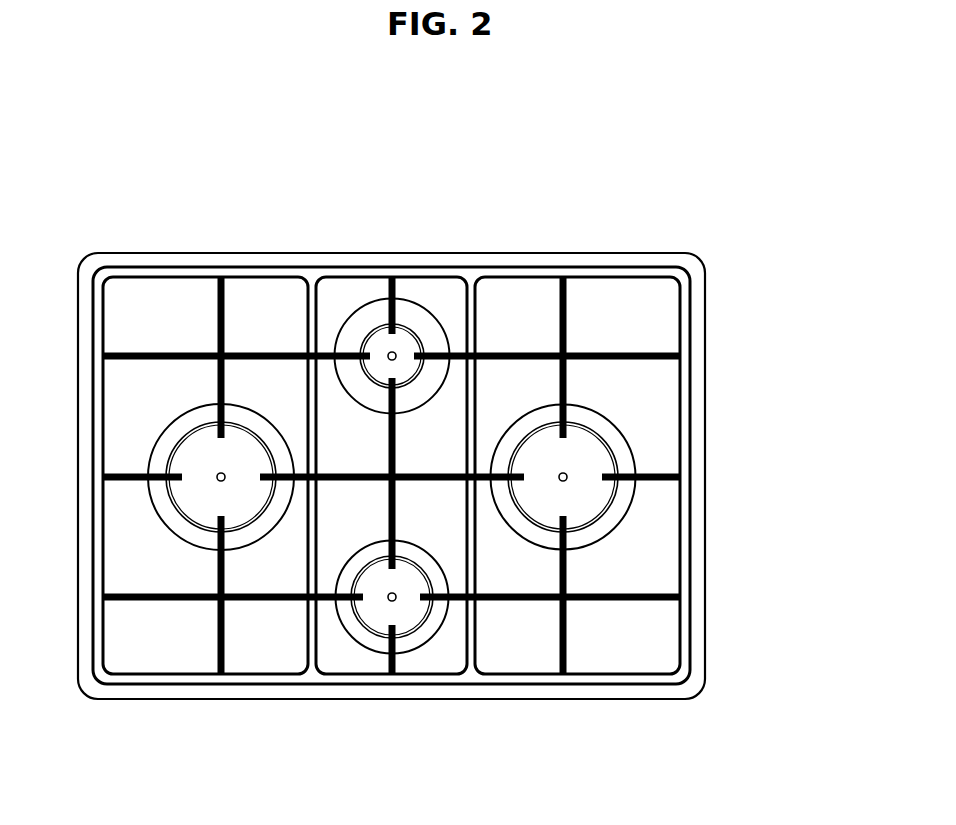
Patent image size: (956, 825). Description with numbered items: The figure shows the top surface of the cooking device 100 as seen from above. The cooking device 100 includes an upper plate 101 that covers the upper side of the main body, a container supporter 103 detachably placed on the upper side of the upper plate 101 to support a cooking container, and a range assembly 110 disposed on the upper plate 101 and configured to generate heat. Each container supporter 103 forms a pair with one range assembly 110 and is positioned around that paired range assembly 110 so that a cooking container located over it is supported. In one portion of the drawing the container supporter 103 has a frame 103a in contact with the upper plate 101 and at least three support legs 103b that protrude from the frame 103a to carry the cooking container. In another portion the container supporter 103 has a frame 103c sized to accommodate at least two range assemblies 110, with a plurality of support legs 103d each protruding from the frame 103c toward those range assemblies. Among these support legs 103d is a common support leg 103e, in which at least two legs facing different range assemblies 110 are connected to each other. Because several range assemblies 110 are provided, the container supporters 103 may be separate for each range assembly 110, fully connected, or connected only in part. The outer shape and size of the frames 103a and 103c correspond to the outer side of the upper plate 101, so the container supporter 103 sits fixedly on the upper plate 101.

The cooking device 100 is at (621, 148).
The upper plate 101 is at (694, 302).
The container supporter 103 is at (578, 684).
The frame 103a is at (156, 278).
The support legs 103b is at (212, 287).
The frame 103c is at (327, 273).
The support legs 103d is at (383, 283).
The common support leg 103e is at (397, 398).
The range assembly 110 is at (617, 443).